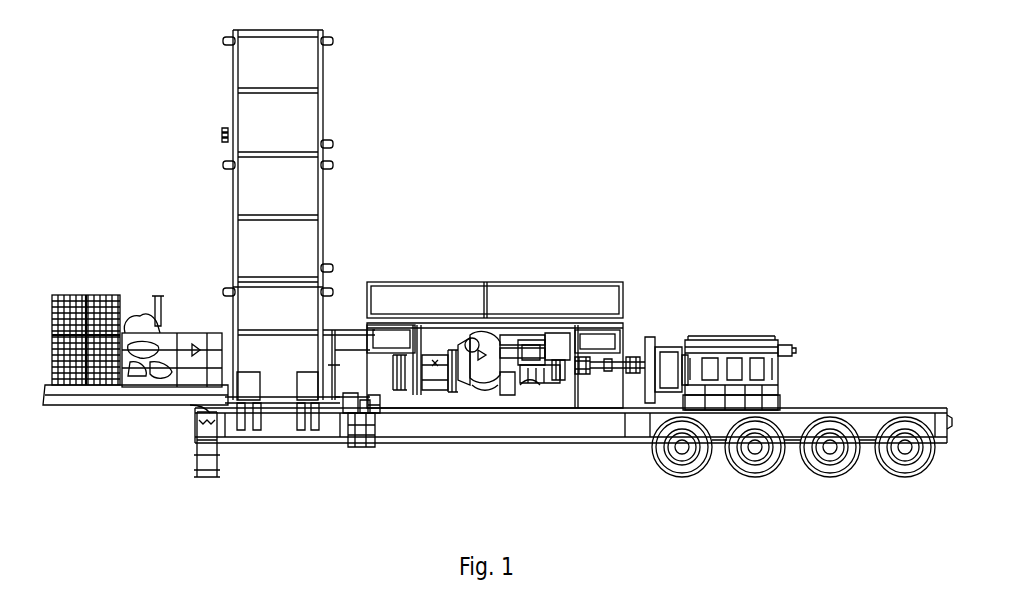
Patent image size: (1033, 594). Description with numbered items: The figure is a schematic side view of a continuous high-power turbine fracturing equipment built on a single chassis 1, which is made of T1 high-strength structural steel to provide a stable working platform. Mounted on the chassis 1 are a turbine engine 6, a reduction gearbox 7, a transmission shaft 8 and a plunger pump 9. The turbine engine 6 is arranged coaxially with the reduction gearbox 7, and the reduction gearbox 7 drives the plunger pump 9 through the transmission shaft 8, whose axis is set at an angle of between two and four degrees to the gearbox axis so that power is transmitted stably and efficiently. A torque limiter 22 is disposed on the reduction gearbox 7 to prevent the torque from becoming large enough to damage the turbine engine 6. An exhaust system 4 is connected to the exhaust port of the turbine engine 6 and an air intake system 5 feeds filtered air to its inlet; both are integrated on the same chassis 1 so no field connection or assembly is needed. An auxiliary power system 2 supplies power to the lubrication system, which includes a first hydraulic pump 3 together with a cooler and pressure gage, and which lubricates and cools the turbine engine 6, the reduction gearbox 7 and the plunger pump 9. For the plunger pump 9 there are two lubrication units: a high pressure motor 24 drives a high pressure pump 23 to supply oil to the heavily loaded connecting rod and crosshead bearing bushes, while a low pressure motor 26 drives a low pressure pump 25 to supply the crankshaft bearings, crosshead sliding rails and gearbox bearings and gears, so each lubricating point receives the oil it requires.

The chassis 1 is at (97, 400).
The auxiliary power system 2 is at (125, 330).
The first hydraulic pump 3 is at (175, 378).
The exhaust system 4 is at (290, 385).
The air intake system 5 is at (553, 283).
The turbine engine 6 is at (465, 390).
The reduction gearbox 7 is at (531, 383).
The transmission shaft 8 is at (614, 370).
The plunger pump 9 is at (740, 338).
The torque limiter 22 is at (585, 365).
The high pressure pump 23 is at (350, 430).
The high pressure motor 24 is at (372, 425).
The low pressure pump 25 is at (353, 440).
The low pressure motor 26 is at (375, 415).